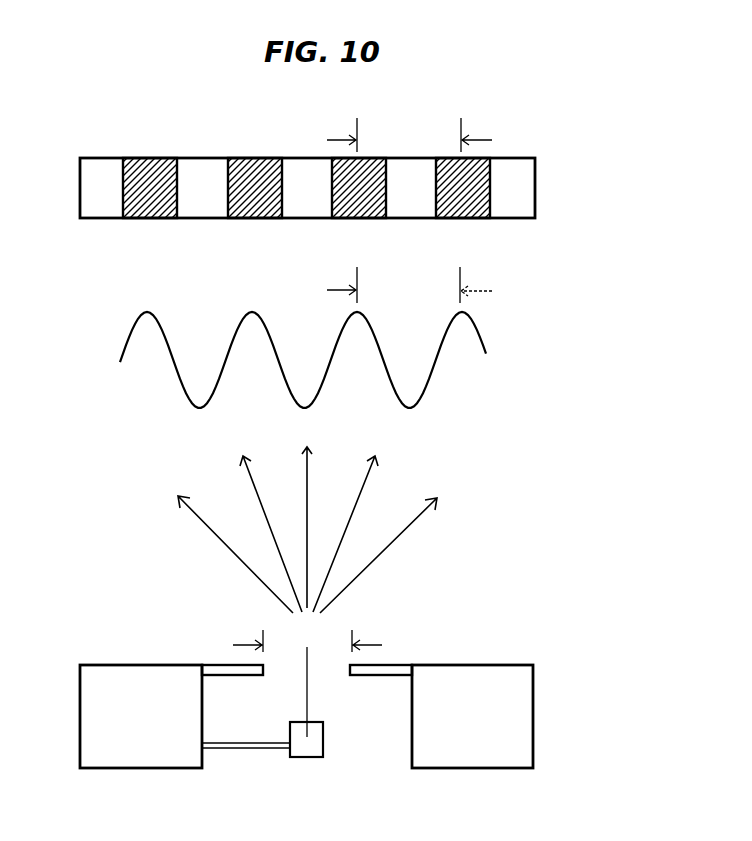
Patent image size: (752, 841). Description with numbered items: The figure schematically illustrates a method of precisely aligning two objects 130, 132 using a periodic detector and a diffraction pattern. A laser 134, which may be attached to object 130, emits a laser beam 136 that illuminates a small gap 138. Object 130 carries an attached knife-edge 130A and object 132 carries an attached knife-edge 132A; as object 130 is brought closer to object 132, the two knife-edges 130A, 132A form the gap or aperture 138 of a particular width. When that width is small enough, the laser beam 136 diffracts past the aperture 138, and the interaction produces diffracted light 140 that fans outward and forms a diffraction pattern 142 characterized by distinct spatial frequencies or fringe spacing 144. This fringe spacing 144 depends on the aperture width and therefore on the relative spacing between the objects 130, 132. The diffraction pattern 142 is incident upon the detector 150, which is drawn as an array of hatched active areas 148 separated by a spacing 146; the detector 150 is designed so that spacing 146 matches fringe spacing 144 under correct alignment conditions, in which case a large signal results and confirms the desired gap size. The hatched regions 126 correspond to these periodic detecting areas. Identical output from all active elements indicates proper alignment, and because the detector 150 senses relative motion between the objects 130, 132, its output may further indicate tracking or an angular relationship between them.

The grating grooves / periodic features 126 is at (360, 200).
The object 130 is at (141, 716).
The knife-edge 130A is at (221, 664).
The object 132 is at (472, 716).
The knife-edge 132A is at (396, 665).
The laser 134 is at (297, 757).
The laser beam 136 is at (309, 707).
The gap 138 is at (346, 626).
The diffracted light 140 is at (212, 572).
The diffraction pattern 142 is at (506, 357).
The fringe spacing 144 is at (475, 277).
The spacing 146 is at (480, 123).
The active areas 148 is at (255, 172).
The detector 150 is at (566, 173).